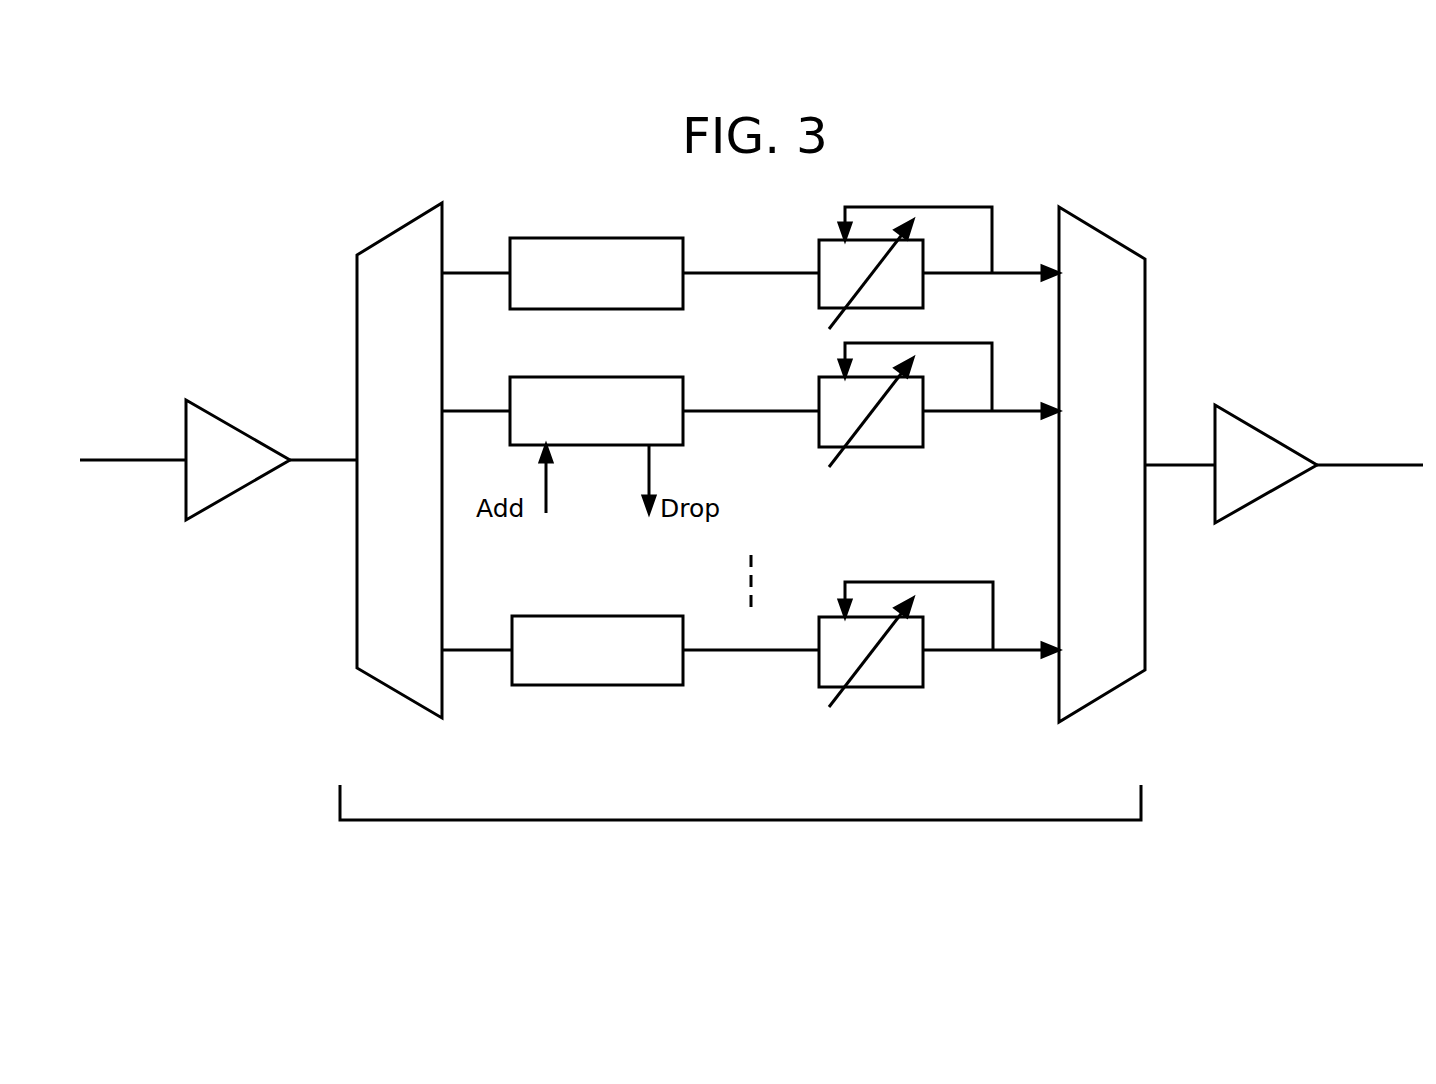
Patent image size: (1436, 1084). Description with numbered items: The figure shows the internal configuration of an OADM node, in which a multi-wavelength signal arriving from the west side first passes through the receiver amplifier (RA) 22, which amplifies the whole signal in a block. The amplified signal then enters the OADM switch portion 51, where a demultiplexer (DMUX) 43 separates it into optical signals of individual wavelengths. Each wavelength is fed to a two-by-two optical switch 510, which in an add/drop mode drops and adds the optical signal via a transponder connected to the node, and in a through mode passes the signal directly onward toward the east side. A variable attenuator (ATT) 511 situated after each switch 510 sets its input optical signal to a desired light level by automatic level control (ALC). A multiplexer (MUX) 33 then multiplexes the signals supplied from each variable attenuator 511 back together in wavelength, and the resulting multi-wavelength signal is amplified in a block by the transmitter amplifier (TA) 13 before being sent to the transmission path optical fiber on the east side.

The receiver amplifier 22 is at (223, 417).
The demultiplexer 43 is at (397, 228).
The 2×2 optical switch 510 is at (590, 686).
The variable attenuator 511 is at (873, 688).
The multiplexer 33 is at (1100, 232).
The transmitter amplifier 13 is at (1253, 427).
The OADM switch portion 51 is at (707, 821).